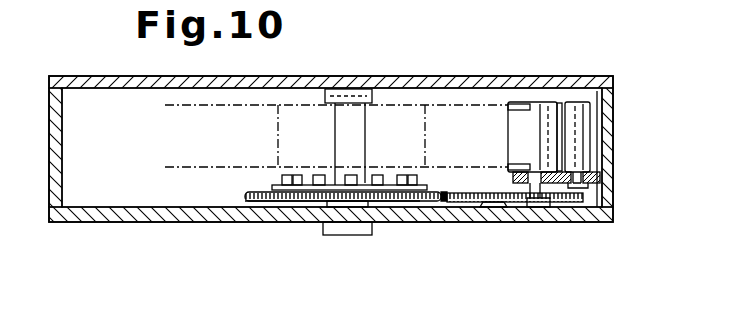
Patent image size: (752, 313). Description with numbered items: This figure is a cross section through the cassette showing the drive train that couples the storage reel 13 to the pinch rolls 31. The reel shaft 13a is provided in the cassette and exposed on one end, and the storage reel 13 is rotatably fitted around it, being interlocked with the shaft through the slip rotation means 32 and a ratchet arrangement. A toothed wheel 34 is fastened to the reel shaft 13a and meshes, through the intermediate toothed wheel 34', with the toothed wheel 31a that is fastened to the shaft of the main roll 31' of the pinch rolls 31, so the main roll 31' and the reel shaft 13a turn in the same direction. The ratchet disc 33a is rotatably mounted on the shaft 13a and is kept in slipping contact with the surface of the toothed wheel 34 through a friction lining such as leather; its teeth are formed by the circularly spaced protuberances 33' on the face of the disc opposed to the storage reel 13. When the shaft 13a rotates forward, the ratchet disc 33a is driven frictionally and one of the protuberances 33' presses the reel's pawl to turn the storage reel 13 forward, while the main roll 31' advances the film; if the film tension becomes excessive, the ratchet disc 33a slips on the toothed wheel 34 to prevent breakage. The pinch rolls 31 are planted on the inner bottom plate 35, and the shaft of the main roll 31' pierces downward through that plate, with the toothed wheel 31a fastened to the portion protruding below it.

The storage reel 13 is at (453, 103).
The reel shaft 13a is at (358, 130).
The pinch rolls 31 is at (619, 138).
The main roll 31' is at (539, 104).
The toothed wheel 31a is at (562, 202).
The slip rotation means 32 is at (327, 188).
The protuberances 33' is at (322, 153).
The ratchet disc 33a is at (272, 186).
The toothed wheel 34 is at (346, 234).
The intermediate toothed wheel 34' is at (515, 234).
The inner bottom plate 35 is at (593, 183).